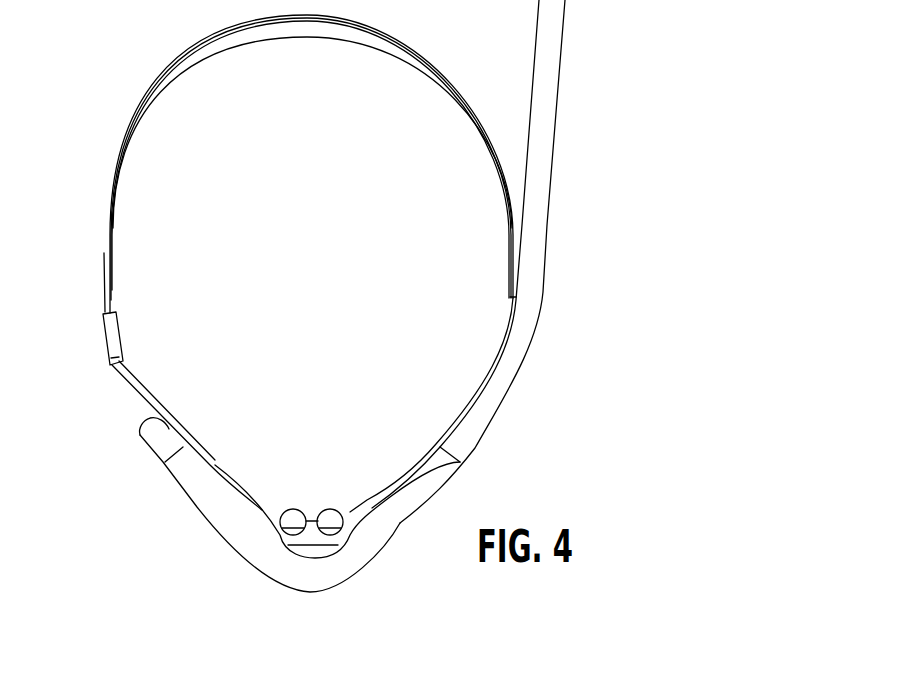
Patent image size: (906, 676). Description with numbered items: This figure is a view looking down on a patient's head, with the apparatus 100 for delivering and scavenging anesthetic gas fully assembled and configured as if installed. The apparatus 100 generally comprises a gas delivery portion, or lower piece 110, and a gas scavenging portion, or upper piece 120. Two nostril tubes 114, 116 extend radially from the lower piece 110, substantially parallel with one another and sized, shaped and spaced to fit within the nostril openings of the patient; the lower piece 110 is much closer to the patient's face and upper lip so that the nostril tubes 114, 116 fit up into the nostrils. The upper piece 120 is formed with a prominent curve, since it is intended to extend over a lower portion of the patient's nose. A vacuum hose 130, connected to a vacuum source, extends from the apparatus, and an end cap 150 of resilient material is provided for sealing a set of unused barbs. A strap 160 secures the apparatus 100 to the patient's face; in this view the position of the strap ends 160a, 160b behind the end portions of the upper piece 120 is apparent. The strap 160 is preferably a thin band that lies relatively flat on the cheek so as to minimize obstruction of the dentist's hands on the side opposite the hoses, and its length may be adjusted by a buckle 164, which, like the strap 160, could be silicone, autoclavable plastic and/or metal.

The apparatus 100 is at (528, 459).
The gas delivery portion 110 is at (309, 521).
The nostril tube 114 is at (329, 509).
The nostril tube 116 is at (294, 509).
The gas scavenging portion 120 is at (328, 592).
The vacuum hose 130 is at (560, 73).
The end cap 150 is at (150, 441).
The strap 160 is at (155, 66).
The strap end 160a is at (420, 463).
The strap end 160b is at (206, 464).
The buckle 164 is at (102, 347).